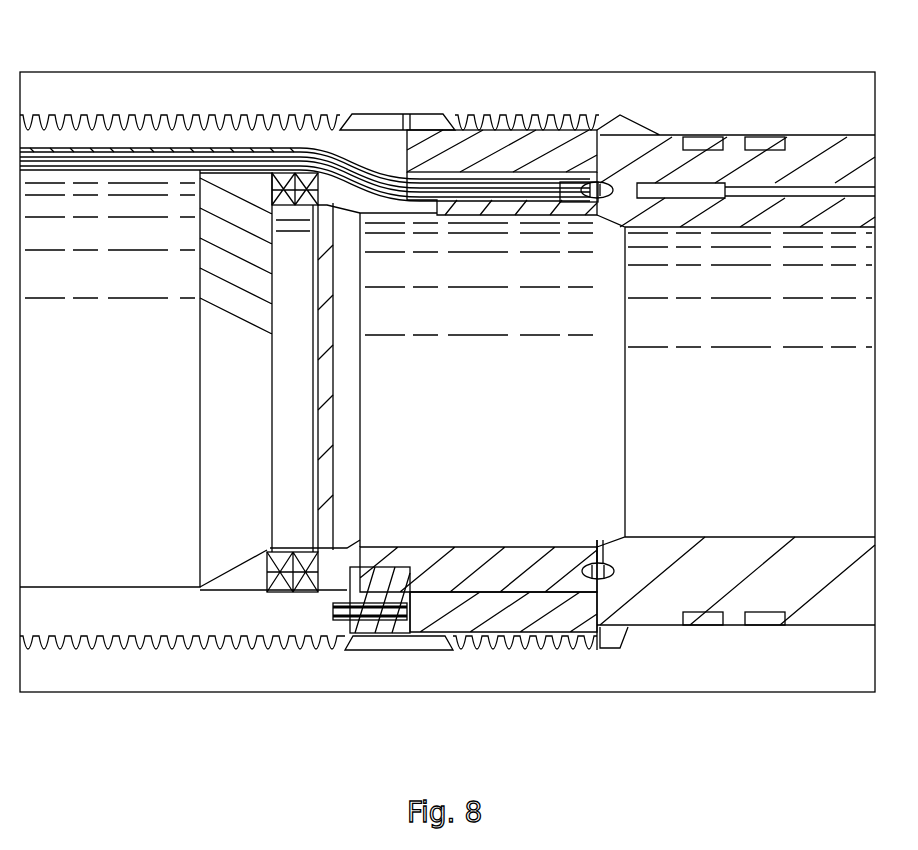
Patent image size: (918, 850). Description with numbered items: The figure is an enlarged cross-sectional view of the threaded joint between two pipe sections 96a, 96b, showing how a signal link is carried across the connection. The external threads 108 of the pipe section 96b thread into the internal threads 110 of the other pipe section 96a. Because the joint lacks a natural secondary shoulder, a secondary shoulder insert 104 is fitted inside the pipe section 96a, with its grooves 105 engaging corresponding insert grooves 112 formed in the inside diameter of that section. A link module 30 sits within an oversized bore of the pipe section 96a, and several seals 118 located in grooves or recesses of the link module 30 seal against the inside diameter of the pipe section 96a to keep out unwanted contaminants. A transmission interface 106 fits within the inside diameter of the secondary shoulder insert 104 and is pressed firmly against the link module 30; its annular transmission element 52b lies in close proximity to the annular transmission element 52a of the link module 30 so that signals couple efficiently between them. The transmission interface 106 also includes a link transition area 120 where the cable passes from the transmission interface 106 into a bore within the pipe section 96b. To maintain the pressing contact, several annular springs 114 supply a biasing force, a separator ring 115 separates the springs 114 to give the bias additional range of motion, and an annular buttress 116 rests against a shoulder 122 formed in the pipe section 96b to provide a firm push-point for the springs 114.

The link module 30 is at (837, 607).
The annular transmission element 52a is at (600, 545).
The annular transmission element 52b is at (593, 568).
The pipe section 96a is at (852, 95).
The pipe section 96b is at (43, 603).
The secondary shoulder insert 104 is at (470, 140).
The grooves 105 is at (534, 130).
The transmission interface 106 is at (487, 210).
The external threads 108 is at (118, 72).
The internal threads 110 is at (157, 90).
The insert grooves 112 is at (488, 170).
The annular springs 114 is at (310, 555).
The separator ring 115 is at (280, 600).
The annular buttress 116 is at (240, 588).
The seals 118 is at (772, 147).
The link transition area 120 is at (335, 160).
The shoulder 122 is at (200, 590).